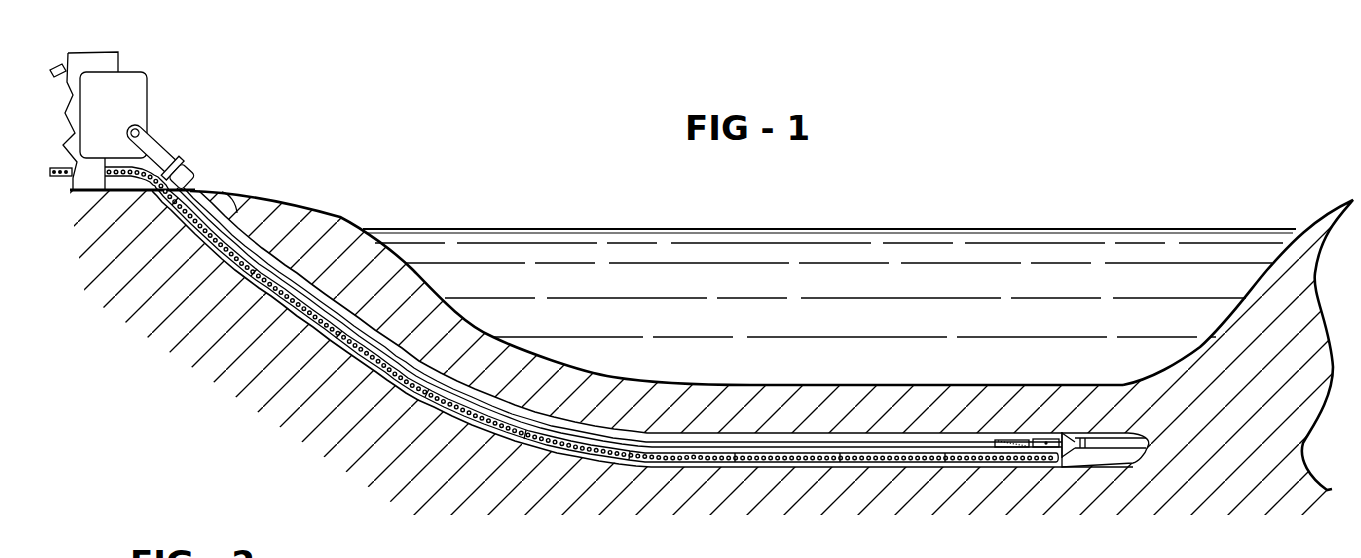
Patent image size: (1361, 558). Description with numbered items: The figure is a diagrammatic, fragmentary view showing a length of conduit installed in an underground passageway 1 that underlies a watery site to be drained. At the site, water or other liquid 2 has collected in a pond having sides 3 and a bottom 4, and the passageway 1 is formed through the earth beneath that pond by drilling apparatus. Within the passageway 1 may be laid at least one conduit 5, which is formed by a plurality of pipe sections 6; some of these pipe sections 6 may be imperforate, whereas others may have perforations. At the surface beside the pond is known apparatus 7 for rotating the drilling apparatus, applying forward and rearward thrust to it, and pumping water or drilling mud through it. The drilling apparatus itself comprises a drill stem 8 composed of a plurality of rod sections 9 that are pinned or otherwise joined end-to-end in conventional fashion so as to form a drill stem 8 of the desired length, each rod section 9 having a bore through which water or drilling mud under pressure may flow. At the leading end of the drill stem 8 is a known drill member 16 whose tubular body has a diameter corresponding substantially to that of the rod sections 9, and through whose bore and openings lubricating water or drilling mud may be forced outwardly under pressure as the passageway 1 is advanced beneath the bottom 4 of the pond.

The underground passageway 1 is at (615, 431).
The liquid 2 is at (887, 250).
The sides 3 is at (1253, 283).
The bottom 4 is at (545, 357).
The conduit 5 is at (521, 451).
The pipe sections 6 is at (317, 350).
The apparatus for rotating and applying thrust 7 is at (155, 80).
The drill stem 8 is at (189, 147).
The rod sections 9 is at (445, 385).
The drill member 16 is at (1092, 462).